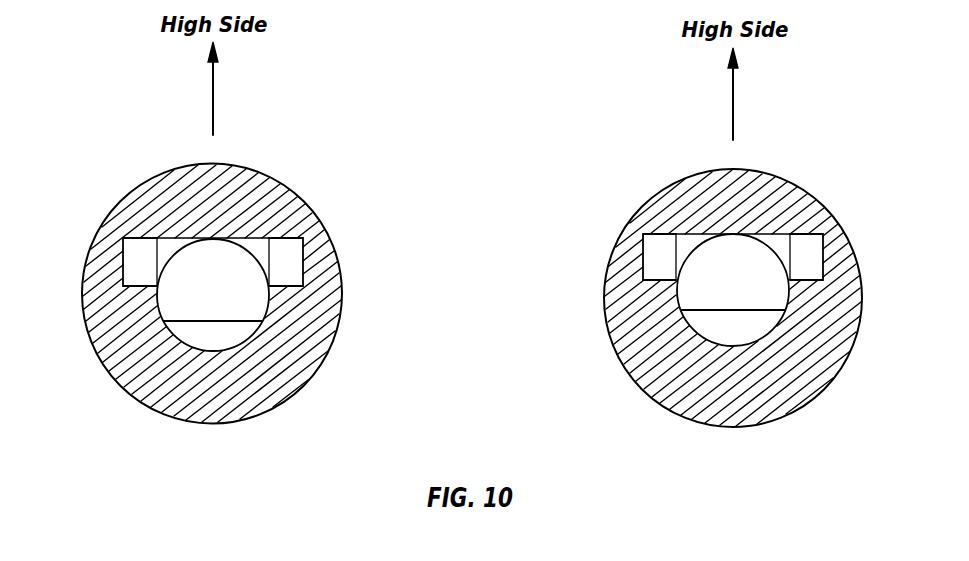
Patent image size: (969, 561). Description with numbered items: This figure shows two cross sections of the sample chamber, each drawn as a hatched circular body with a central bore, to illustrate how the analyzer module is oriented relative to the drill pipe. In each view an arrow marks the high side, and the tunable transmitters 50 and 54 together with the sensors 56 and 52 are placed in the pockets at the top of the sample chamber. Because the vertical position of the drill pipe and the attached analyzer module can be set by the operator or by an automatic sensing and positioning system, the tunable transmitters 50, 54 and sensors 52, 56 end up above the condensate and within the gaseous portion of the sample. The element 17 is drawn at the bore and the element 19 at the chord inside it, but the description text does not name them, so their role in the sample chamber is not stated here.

The bore 17 is at (207, 340).
The flat 19 is at (252, 301).
The tunable transmitter 50 is at (815, 268).
The sensor 52 is at (653, 268).
The tunable transmitter 54 is at (293, 264).
The sensor 56 is at (133, 264).